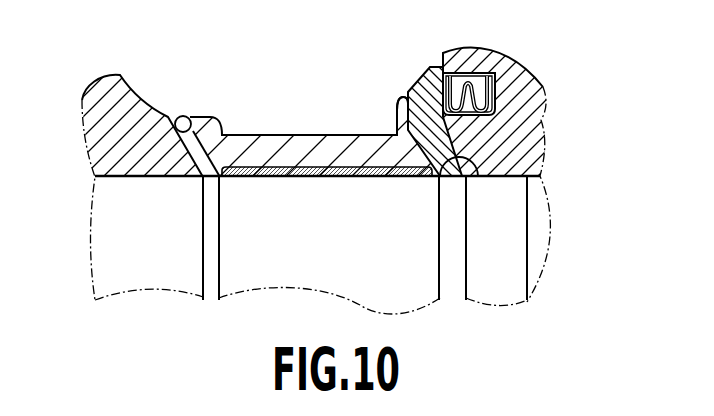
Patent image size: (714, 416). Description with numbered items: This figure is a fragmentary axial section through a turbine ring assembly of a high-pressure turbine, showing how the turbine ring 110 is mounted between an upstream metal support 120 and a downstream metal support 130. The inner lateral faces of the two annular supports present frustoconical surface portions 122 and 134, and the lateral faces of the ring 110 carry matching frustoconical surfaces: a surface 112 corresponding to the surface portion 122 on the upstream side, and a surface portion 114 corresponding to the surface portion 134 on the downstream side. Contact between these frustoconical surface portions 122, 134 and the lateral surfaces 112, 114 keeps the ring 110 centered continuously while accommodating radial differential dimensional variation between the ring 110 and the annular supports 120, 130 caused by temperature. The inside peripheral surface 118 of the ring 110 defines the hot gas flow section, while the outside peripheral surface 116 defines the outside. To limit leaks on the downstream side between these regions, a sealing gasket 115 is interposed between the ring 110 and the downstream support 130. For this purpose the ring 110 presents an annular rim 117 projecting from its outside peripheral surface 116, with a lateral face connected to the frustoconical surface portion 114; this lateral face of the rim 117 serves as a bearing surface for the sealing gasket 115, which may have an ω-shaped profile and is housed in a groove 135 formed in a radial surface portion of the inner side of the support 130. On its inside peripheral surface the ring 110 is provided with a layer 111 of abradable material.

The turbine ring 110 is at (275, 152).
The layer of abradable material 111 is at (298, 177).
The frustoconical surface of lateral face 112 is at (176, 162).
The frustoconical surface portion of lateral face 114 is at (478, 150).
The sealing gasket 115 is at (473, 80).
The outside peripheral surface 116 is at (308, 135).
The annular rim 117 is at (425, 90).
The inside peripheral surface 118 is at (450, 177).
The upstream metal support 120 is at (117, 113).
The frustoconical surface portion 122 is at (183, 116).
The downstream metal support 130 is at (532, 103).
The frustoconical surface portion 134 is at (403, 114).
The groove 135 is at (458, 82).